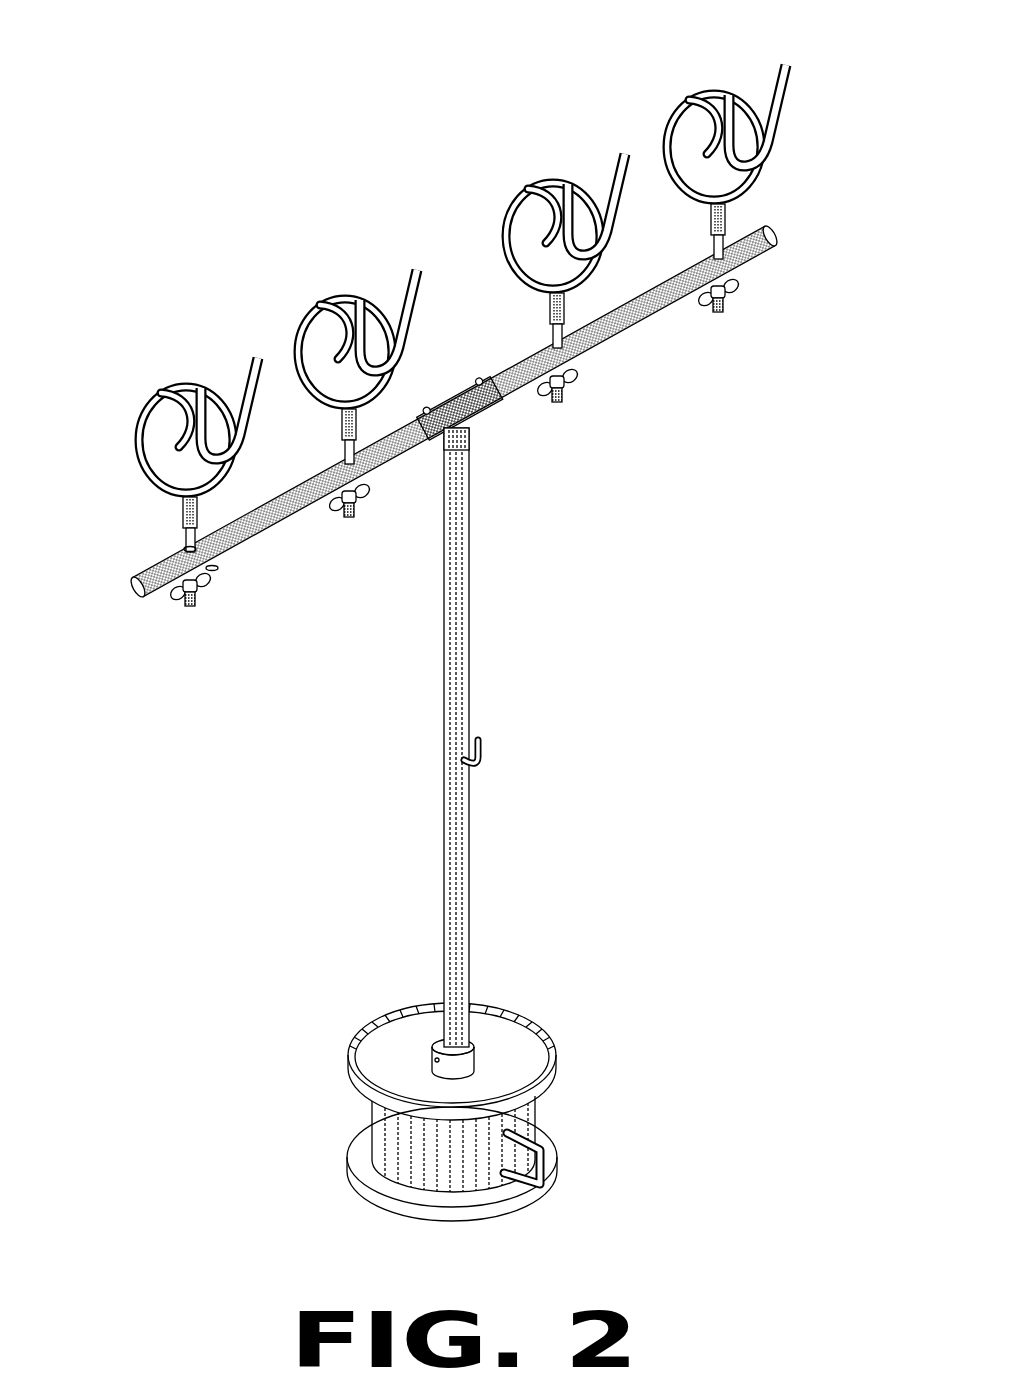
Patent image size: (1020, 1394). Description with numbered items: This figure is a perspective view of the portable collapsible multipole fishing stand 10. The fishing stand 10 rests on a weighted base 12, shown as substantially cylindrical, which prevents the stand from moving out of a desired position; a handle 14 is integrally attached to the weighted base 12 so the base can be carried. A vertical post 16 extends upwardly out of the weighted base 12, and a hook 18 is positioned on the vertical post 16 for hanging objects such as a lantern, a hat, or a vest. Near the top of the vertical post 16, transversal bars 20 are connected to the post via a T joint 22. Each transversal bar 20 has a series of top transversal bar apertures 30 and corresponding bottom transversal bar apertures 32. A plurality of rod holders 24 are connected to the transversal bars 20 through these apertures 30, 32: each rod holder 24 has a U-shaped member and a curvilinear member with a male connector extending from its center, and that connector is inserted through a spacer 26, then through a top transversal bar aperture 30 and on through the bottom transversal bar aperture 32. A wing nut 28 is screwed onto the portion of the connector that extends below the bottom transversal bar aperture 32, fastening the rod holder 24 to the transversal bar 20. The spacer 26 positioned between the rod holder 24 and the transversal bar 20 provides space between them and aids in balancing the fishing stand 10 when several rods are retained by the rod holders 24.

The portable collapsible multipole fishing stand 10 is at (410, 614).
The weighted base 12 is at (348, 1067).
The handle 14 is at (552, 1135).
The vertical post 16 is at (468, 600).
The hook 18 is at (488, 750).
The transversal bar 20 is at (272, 533).
The T joint 22 is at (470, 430).
The rod holder 24 is at (730, 115).
The spacer 26 is at (183, 550).
The wing nut 28 is at (177, 598).
The top transversal bar aperture 30 is at (178, 552).
The bottom transversal bar aperture 32 is at (212, 565).